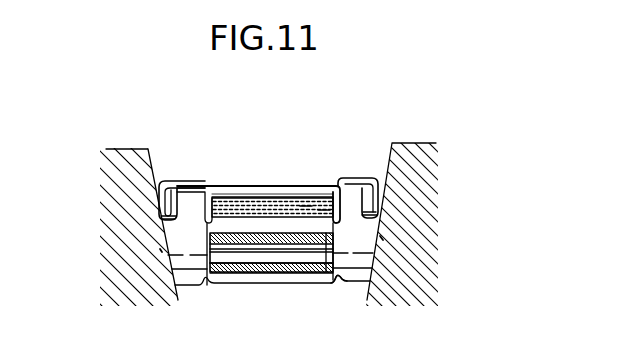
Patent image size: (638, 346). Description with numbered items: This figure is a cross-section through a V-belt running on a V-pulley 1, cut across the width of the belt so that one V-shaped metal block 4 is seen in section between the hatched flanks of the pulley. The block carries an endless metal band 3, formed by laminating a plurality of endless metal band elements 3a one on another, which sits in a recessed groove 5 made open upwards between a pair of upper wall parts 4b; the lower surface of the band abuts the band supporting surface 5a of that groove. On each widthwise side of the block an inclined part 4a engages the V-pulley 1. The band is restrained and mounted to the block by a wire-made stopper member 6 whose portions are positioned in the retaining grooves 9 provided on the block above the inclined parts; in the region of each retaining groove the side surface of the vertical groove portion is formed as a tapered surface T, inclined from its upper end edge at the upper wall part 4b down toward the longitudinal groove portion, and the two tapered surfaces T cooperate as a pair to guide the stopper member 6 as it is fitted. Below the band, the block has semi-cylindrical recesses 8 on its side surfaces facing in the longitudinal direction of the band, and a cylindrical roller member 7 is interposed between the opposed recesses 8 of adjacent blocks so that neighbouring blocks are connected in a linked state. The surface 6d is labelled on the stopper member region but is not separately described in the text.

The V-pulley 1 is at (129, 150).
The tapered surface T is at (160, 186).
The endless metal band 3 is at (245, 200).
The endless metal band element 3a is at (303, 207).
The V-shaped metal block 4 is at (203, 278).
The inclined part 4a is at (161, 250).
The upper wall part 4b is at (178, 180).
The recessed groove 5 is at (324, 217).
The band supporting surface 5a is at (335, 281).
The stopper member 6 is at (217, 186).
The plate inner surface 6d is at (262, 191).
The cylindrical roller member 7 is at (315, 273).
The semi-cylindrical recess 8 is at (240, 262).
The retaining groove 9 is at (162, 213).